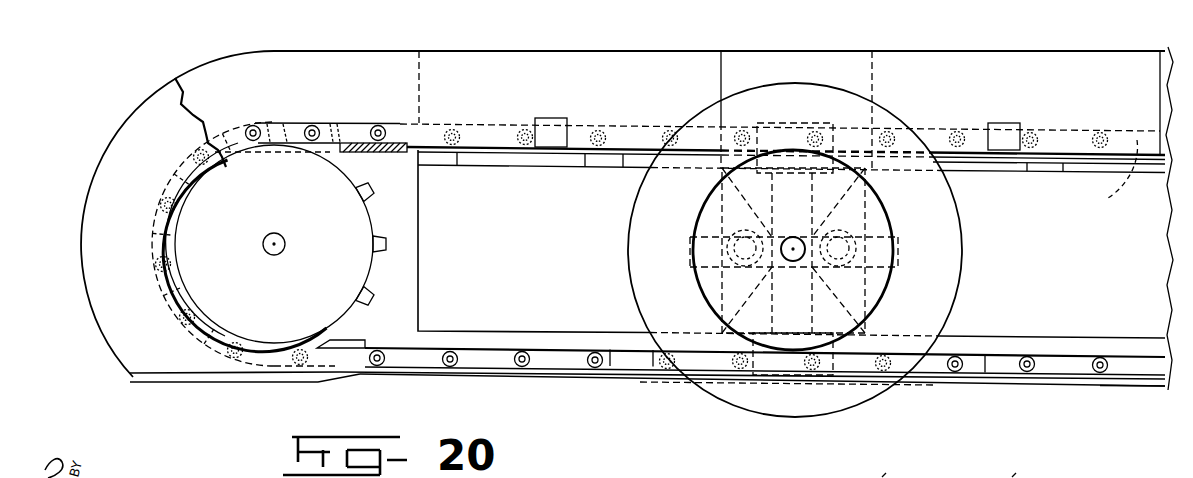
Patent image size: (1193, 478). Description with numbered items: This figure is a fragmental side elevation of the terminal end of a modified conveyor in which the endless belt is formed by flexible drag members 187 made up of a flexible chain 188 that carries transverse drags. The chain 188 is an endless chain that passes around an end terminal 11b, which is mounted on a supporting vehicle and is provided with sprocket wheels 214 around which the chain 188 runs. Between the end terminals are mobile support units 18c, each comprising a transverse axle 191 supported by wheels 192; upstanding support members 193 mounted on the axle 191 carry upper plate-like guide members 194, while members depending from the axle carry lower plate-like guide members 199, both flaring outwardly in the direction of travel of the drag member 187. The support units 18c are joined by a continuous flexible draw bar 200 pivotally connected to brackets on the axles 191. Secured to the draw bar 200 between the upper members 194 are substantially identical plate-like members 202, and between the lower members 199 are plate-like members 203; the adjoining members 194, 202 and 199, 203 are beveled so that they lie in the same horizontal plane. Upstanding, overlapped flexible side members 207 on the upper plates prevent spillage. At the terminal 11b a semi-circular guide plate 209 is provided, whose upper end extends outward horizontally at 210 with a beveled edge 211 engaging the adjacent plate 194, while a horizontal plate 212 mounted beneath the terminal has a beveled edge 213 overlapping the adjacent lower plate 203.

The end terminal 11b is at (213, 283).
The horizontal plate 212 is at (246, 377).
The beveled edge 213 is at (495, 376).
The lower plate-like guide member 199 is at (1145, 382).
The horizontal outwardly extending upper end 210 is at (347, 142).
The beveled edge 211 is at (487, 151).
The plate-like guide member 194 is at (940, 148).
The plate-like member 202 is at (1040, 155).
The sprocket wheel 214 is at (355, 227).
The semi-circular guide plate 209 is at (189, 207).
The flexible draw bar 200 is at (532, 238).
The mobile support unit 18c is at (960, 270).
The wheel 192 is at (640, 221).
The transverse axle 191 is at (801, 240).
The upstanding support member 193 is at (781, 192).
The flexible drag member 187 is at (552, 352).
The lower plate-like member 203 is at (913, 378).
The flexible chain 188 is at (1108, 200).
The upstanding overlapped side member 207 is at (967, 469).